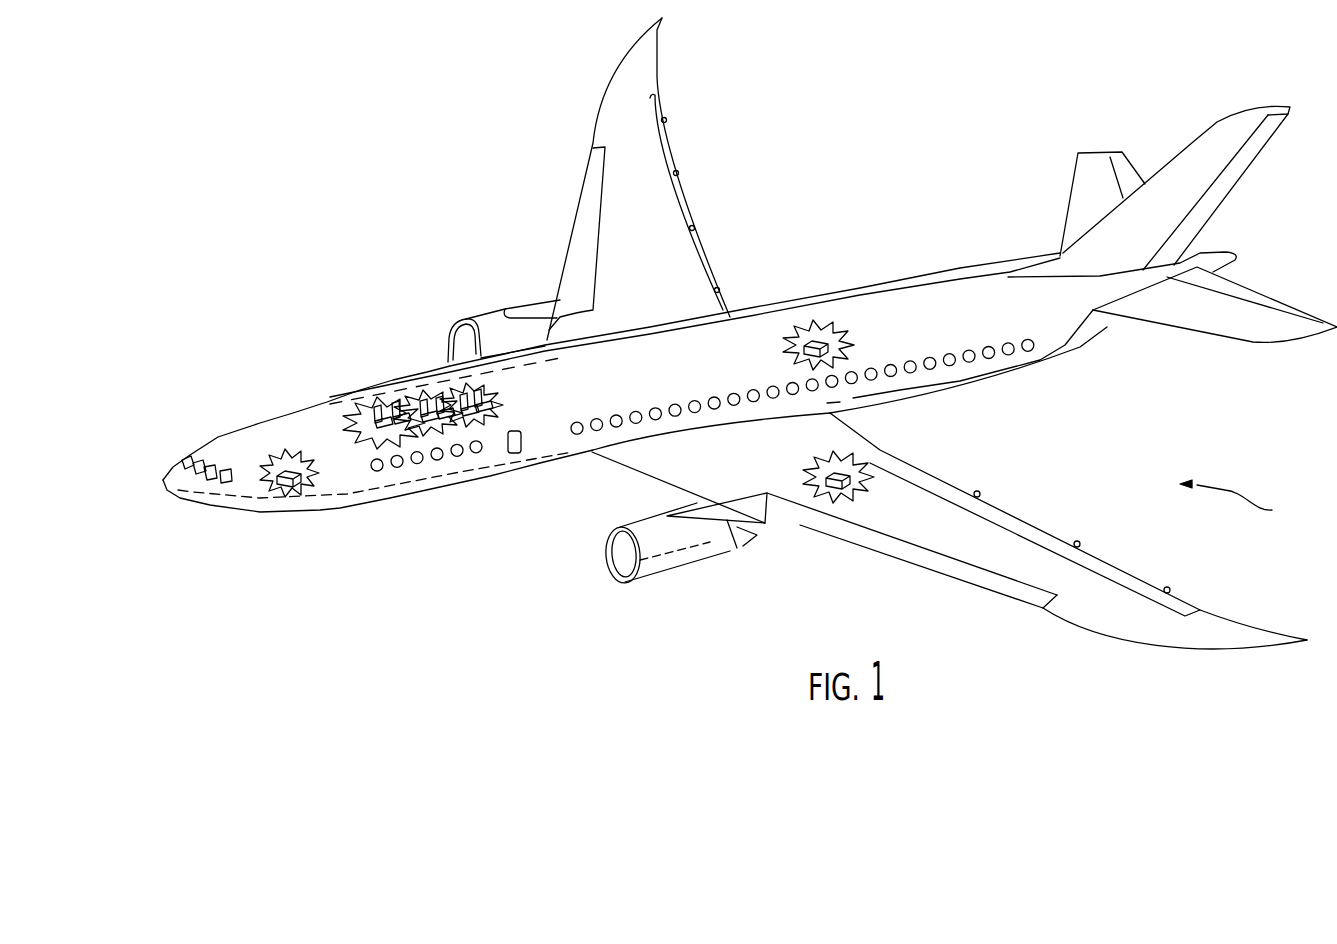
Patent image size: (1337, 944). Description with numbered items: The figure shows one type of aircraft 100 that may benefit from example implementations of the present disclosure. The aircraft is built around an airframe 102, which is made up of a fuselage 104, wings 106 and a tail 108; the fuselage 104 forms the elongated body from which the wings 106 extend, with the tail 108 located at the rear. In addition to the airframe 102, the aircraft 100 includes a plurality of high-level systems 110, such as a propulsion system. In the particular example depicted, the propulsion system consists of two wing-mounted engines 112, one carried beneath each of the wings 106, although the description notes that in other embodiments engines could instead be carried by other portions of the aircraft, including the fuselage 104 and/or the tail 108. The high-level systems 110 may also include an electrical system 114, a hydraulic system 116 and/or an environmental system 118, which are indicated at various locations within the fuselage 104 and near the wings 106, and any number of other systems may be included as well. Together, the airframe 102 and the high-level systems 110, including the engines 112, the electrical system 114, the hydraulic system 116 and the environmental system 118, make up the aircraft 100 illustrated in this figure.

The aircraft 100 is at (410, 224).
The airframe 102 is at (422, 367).
The fuselage 104 is at (442, 488).
The wings 106 is at (597, 124).
The tail 108 is at (1017, 196).
The high-level systems 110 is at (1252, 506).
The wing-mounted engines 112 is at (493, 308).
The electrical system 114 is at (292, 450).
The hydraulic system 116 is at (852, 467).
The environmental system 118 is at (820, 343).